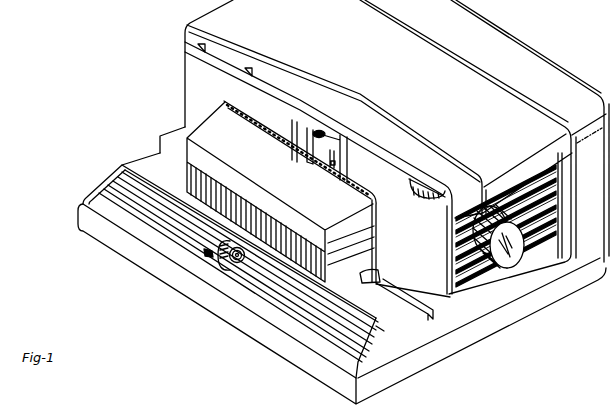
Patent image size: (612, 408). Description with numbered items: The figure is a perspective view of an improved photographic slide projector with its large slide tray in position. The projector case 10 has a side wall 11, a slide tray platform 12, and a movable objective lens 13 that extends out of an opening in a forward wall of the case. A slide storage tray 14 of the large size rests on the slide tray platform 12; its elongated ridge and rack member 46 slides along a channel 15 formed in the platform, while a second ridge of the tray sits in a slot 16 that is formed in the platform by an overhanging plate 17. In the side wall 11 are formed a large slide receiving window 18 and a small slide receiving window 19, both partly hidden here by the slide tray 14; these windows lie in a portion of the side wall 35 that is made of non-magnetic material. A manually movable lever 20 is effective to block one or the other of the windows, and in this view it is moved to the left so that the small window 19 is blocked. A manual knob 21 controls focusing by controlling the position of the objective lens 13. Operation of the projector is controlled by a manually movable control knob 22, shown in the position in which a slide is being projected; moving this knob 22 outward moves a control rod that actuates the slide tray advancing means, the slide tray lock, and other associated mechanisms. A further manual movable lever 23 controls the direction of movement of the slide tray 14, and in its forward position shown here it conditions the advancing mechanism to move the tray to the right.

The projector case 10 is at (528, 28).
The side wall 11 is at (185, 78).
The slide tray platform 12 is at (153, 155).
The objective lens 13 is at (513, 257).
The slide storage tray 14 is at (260, 161).
The channel 15 is at (436, 312).
The slot 16 is at (379, 329).
The overhanging plate 17 is at (349, 314).
The large slide receiving window 18 is at (308, 127).
The small slide receiving window 19 is at (333, 156).
The manually movable lever 20 is at (321, 131).
The manual knob 21 is at (426, 184).
The control knob 22 is at (224, 270).
The manual movable lever 23 is at (205, 254).
The portion of the side wall 35 is at (342, 142).
The ridge and rack member 46 is at (382, 275).